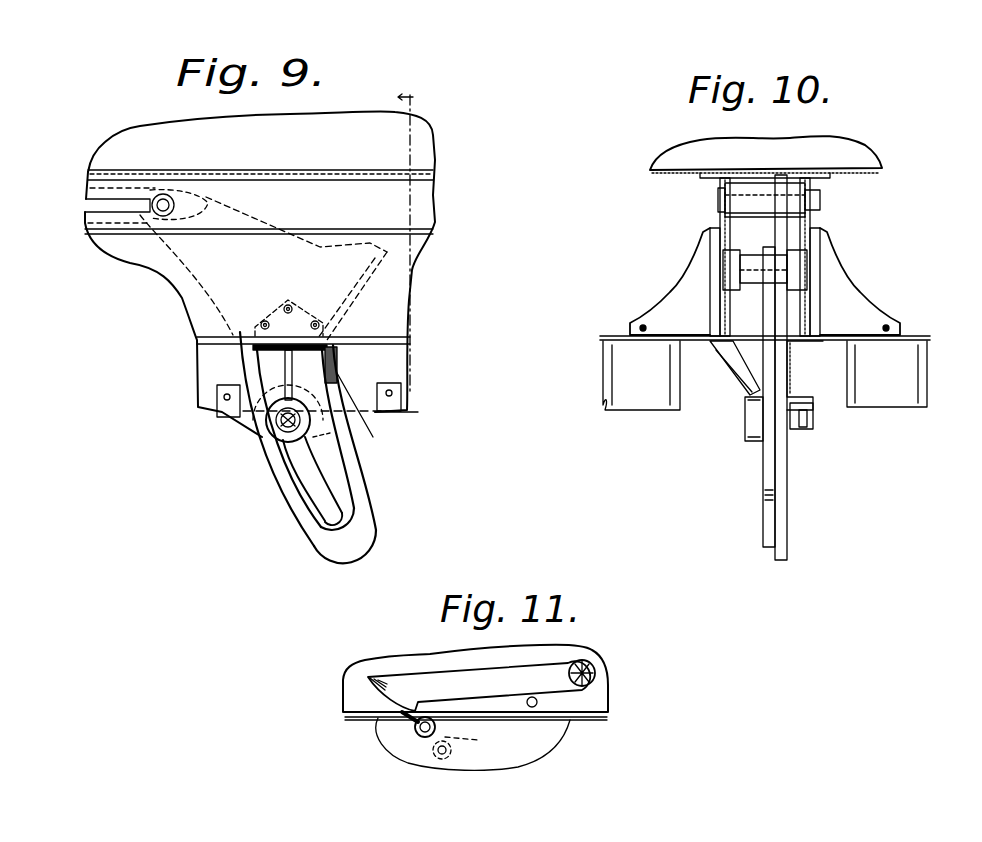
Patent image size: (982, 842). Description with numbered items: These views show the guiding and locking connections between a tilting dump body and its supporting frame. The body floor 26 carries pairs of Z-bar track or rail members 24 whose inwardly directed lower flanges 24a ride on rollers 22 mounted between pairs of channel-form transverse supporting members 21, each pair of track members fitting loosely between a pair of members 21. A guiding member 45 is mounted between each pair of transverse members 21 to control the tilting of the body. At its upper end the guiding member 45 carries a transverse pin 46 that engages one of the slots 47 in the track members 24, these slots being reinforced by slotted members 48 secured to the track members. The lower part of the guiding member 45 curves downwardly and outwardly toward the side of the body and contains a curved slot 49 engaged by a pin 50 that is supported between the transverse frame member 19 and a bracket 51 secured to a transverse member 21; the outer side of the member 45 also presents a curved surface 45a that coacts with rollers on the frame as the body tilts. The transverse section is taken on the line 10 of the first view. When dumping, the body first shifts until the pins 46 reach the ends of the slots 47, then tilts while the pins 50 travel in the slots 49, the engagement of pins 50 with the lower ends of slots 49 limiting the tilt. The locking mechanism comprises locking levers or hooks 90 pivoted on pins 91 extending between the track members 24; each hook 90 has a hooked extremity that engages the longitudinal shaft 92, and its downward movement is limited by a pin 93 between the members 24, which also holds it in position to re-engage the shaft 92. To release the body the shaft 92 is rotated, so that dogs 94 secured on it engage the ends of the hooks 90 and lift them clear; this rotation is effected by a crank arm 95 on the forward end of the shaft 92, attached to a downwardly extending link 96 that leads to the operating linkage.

In FIG. 9, the section line 10— 10 is at (380, 259).
In FIG. 10, the transverse frame member 19 is at (790, 365).
In FIG. 9, the transverse supporting members 21 is at (398, 300).
In FIG. 10, the transverse supporting members 21 is at (723, 295).
In FIG. 10, the rollers 22 is at (733, 272).
In FIG. 9, the track or rail members 24 is at (420, 206).
In FIG. 10, the track or rail members 24 is at (713, 225).
In FIG. 10, the lower flanges 24a is at (717, 245).
In FIG. 9, the floor 26 is at (292, 170).
In FIG. 9, the guiding member 45 is at (273, 470).
In FIG. 10, the guiding member 45 is at (762, 477).
In FIG. 9, the curved surface 45a is at (321, 410).
In FIG. 10, the curved surface 45a is at (770, 308).
In FIG. 9, the transverse pin 46 is at (163, 194).
In FIG. 10, the transverse pin 46 is at (820, 200).
In FIG. 9, the slots 47 is at (95, 207).
In FIG. 9, the slotted members 48 is at (103, 224).
In FIG. 9, the curved slot 49 is at (310, 483).
In FIG. 9, the pin 50 is at (263, 440).
In FIG. 10, the pin 50 is at (803, 428).
In FIG. 9, the bracket 51 is at (265, 355).
In FIG. 10, the bracket 51 is at (740, 372).
In FIG. 11, the locking levers or hooks 90 is at (479, 686).
In FIG. 11, the pins 91 is at (596, 673).
In FIG. 11, the longitudinal shaft 92 is at (421, 732).
In FIG. 11, the pin 93 is at (533, 708).
In FIG. 11, the dogs 94 is at (410, 717).
In FIG. 11, the crank arm 95 is at (475, 740).
In FIG. 11, the link 96 is at (441, 760).